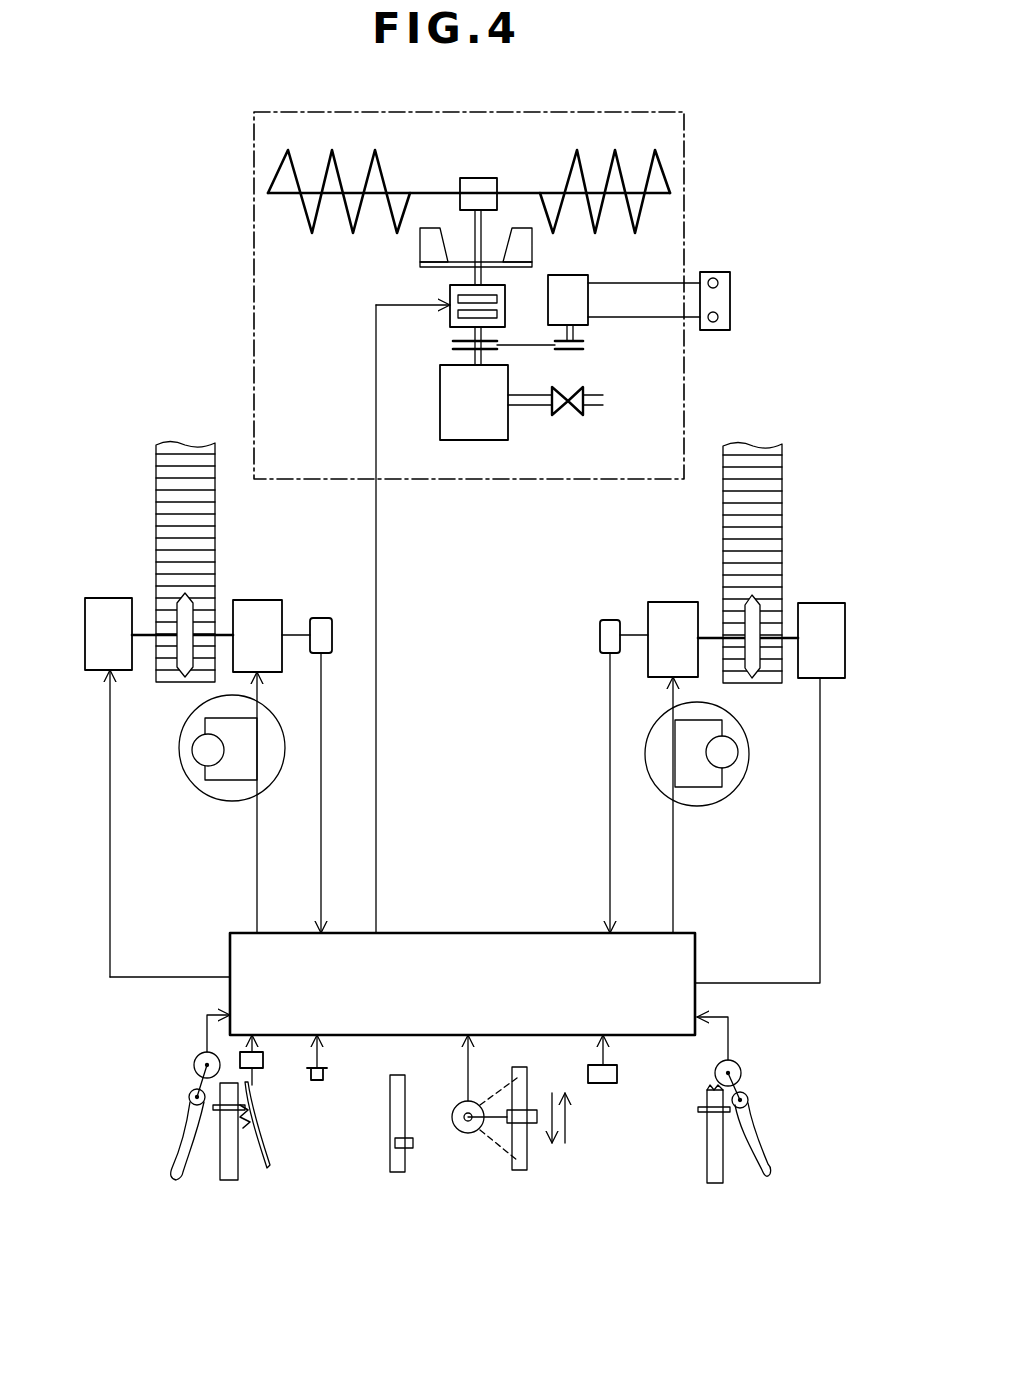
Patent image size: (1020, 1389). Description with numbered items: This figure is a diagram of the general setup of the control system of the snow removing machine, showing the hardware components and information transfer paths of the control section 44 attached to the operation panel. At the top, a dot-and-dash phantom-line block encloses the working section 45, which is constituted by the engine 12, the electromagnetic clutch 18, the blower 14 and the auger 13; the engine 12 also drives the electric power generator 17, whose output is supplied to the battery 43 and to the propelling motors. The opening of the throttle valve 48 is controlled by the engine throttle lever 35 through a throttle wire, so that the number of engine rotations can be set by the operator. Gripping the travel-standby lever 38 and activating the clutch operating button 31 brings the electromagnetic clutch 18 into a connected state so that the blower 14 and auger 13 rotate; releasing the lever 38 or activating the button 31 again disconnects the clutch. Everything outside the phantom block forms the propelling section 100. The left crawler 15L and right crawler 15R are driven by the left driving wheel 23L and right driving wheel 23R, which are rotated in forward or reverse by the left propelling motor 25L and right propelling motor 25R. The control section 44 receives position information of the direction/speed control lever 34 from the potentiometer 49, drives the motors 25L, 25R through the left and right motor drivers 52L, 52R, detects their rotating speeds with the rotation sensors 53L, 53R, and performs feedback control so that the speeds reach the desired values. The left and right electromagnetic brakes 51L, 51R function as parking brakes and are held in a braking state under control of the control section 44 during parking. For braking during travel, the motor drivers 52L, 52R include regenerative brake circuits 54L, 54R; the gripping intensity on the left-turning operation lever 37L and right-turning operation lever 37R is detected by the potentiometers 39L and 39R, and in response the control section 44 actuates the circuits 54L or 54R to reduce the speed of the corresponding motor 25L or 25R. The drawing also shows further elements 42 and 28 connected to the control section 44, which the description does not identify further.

The working section 45 is at (690, 137).
The auger 13 is at (508, 190).
The blower 14 is at (433, 247).
The electromagnetic clutch 18 is at (450, 322).
The electric power generator 17 is at (578, 308).
The battery 43 is at (730, 305).
The engine 12 is at (460, 423).
The throttle valve 48 is at (587, 410).
The left crawler 15L is at (175, 500).
The right crawler 15R is at (762, 510).
The left driving wheel 23L is at (182, 610).
The right driving wheel 23R is at (755, 610).
The left propelling motor 25L is at (255, 605).
The right propelling motor 25R is at (663, 603).
The left electromagnetic brake 51L is at (100, 620).
The right electromagnetic brake 51R is at (825, 623).
The left rotation sensor 53L is at (320, 622).
The right rotation sensor 53R is at (602, 622).
The left motor driver 52L is at (218, 798).
The right motor driver 52R is at (713, 802).
The left regenerative brake circuit 54L is at (202, 755).
The right regenerative brake circuit 54R is at (728, 760).
The propelling section 100 is at (98, 745).
The control section 44 is at (655, 1036).
The left potentiometer 39L is at (197, 1063).
The right potentiometer 39R is at (740, 1068).
The left-turning operation lever 37L is at (172, 1155).
The right-turning operation lever 37R is at (758, 1162).
The travel-standby lever 38 is at (267, 1160).
The speed potentiometer 42 is at (263, 1063).
The clutch operating button 31 is at (318, 1083).
The engine throttle lever 35 is at (413, 1150).
The potentiometer 49 is at (470, 1130).
The direction/speed control lever 34 is at (532, 1125).
The auger switch 28 is at (602, 1085).